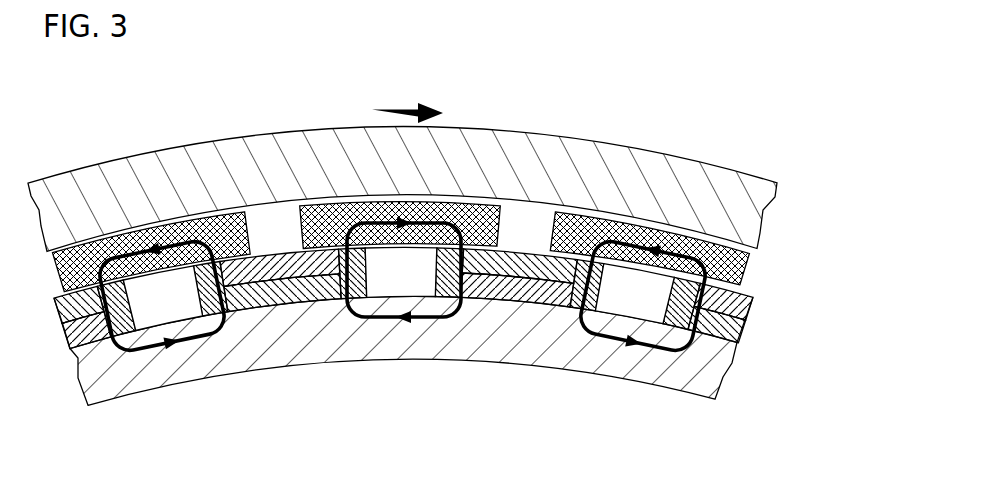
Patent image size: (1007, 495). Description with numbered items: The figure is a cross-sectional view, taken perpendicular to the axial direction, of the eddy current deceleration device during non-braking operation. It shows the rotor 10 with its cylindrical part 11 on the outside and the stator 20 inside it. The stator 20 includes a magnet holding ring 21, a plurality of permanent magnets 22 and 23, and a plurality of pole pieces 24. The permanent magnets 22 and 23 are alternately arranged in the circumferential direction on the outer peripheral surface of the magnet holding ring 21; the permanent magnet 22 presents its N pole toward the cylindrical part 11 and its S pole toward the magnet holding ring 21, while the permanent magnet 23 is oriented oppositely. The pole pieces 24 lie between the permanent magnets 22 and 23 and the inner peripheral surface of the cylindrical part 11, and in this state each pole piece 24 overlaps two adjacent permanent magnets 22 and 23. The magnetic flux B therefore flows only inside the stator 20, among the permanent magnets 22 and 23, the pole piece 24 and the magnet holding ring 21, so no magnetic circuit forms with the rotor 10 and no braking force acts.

The rotor 10 is at (449, 182).
The cylindrical part 11 is at (729, 176).
The stator 20 is at (453, 356).
The magnet holding ring 21 is at (652, 378).
The permanent magnet 22 is at (322, 302).
The permanent magnet 23 is at (112, 324).
The pole piece 24 is at (144, 238).
The magnetic flux B is at (193, 341).